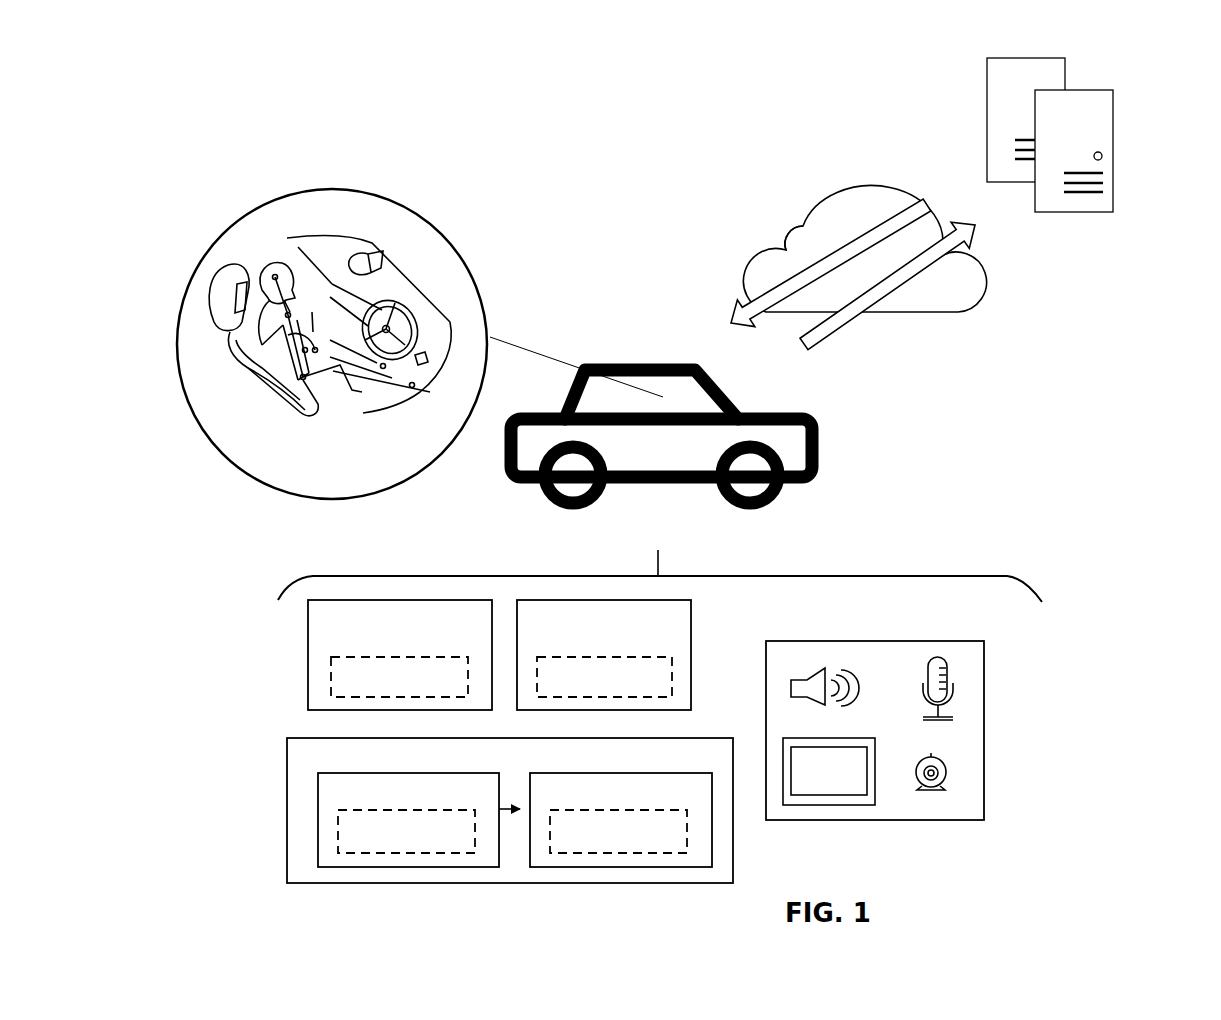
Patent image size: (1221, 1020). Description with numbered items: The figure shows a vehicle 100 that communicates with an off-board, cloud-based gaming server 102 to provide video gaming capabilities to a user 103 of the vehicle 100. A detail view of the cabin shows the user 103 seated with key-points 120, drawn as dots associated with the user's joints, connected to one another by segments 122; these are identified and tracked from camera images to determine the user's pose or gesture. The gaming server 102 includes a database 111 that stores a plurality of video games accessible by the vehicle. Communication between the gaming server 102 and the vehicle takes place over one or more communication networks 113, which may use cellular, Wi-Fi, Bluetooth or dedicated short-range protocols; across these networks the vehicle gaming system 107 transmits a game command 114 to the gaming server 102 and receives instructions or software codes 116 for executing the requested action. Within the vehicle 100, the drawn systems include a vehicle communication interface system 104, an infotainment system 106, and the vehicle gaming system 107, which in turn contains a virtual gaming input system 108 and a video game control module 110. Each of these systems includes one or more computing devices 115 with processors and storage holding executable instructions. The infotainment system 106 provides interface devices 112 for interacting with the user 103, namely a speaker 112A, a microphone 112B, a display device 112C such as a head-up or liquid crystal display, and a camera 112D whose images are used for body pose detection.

The vehicle 100 is at (607, 362).
The gaming server 102 is at (1101, 107).
The user 103 is at (270, 252).
The vehicle communication interface system (VCIS) 104 is at (400, 655).
The infotainment system 106 is at (604, 655).
The vehicle gaming system 107 is at (510, 810).
The virtual gaming input system (VGIS) 108 is at (408, 820).
The video game control module (VGCM) 110 is at (621, 820).
The database 111 is at (1075, 90).
The interface devices 112 is at (853, 640).
The speaker 112A is at (798, 669).
The microphone 112B is at (963, 668).
The display device 112C is at (820, 811).
The camera 112D is at (912, 790).
The communication networks 113 is at (850, 202).
The game command 114 is at (884, 300).
The computing device (CD) 115 is at (509, 755).
The instructions or software codes 116 is at (820, 255).
The key-points 120 is at (275, 330).
The segments 122 is at (292, 384).